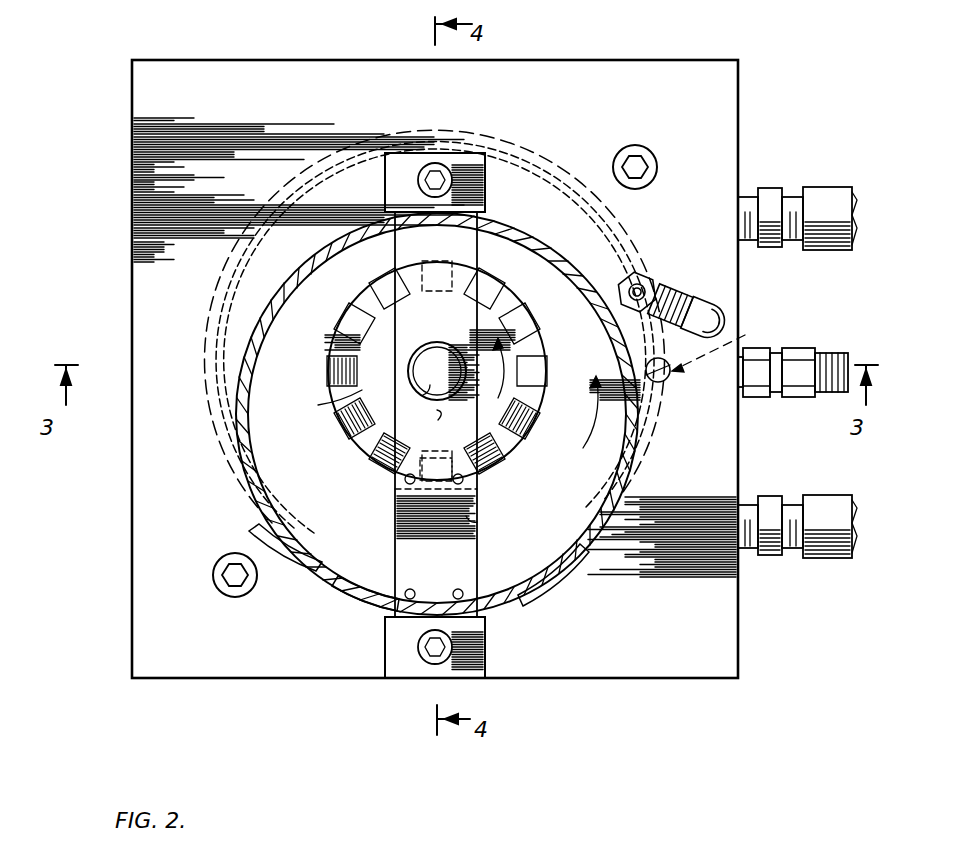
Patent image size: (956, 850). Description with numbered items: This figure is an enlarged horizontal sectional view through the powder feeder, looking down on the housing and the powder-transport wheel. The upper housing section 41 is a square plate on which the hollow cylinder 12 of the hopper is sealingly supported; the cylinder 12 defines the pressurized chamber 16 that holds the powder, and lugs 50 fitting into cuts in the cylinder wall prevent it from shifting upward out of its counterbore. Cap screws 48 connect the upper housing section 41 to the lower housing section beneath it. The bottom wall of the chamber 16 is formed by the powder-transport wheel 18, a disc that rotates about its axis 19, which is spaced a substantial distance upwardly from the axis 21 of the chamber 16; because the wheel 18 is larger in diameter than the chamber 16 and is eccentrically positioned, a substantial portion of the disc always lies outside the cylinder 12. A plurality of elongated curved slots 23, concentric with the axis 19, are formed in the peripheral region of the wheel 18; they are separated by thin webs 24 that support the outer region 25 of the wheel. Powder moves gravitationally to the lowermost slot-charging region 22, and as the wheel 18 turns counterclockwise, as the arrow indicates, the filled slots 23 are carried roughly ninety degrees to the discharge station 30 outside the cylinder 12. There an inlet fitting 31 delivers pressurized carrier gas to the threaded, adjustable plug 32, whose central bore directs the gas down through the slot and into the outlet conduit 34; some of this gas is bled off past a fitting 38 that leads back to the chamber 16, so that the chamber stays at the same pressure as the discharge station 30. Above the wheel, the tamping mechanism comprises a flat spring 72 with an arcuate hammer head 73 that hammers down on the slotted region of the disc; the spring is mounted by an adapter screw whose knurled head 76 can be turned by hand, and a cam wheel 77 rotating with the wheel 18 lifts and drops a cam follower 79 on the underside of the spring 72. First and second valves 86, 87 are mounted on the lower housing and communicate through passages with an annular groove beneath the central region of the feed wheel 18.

The hollow cylinder 12 is at (508, 237).
The chamber 16 is at (348, 502).
The powder-transport wheel 18 is at (275, 262).
The axis of rotation of the wheel 19 is at (440, 368).
The axis of chamber 21 is at (438, 420).
The slot-charging region 22 is at (458, 584).
The slots 23 is at (483, 137).
The webs 24 is at (562, 166).
The region of wheel radially outward of the slots 25 is at (585, 186).
The discharge station 30 is at (724, 342).
The inlet fitting 31 is at (796, 348).
The plug 32 is at (670, 376).
The outlet conduit 34 is at (620, 286).
The fitting 38 is at (690, 302).
The upper housing section 41 is at (132, 636).
The cap screws 48 is at (657, 170).
The lugs 50 is at (385, 187).
The flat spring 72 is at (480, 520).
The hammer head 73 is at (390, 582).
The head of adapter screw 76 is at (425, 396).
The cam wheel 77 is at (323, 404).
The cam follower 79 is at (478, 492).
The first valve 86 is at (830, 187).
The second valve 87 is at (828, 558).